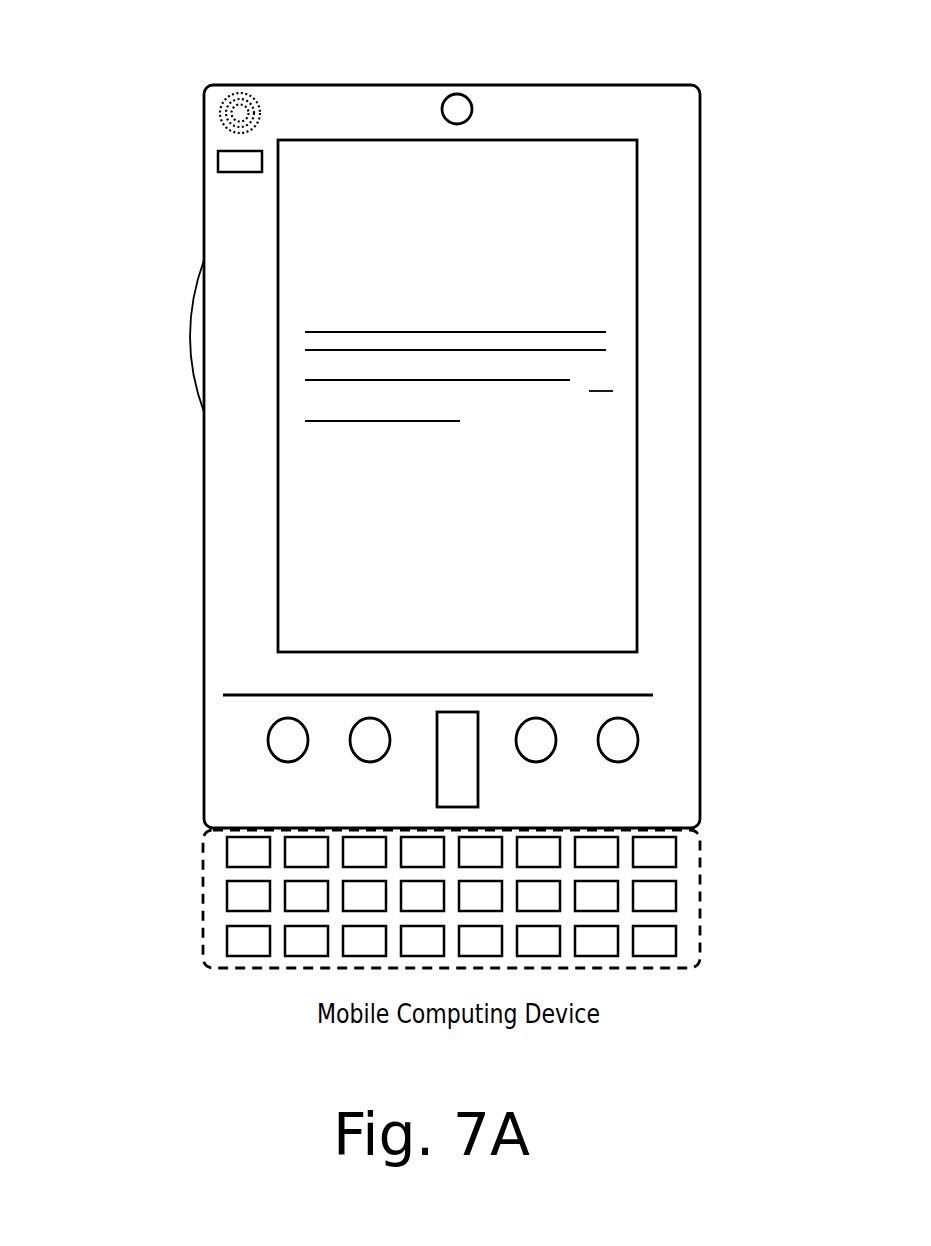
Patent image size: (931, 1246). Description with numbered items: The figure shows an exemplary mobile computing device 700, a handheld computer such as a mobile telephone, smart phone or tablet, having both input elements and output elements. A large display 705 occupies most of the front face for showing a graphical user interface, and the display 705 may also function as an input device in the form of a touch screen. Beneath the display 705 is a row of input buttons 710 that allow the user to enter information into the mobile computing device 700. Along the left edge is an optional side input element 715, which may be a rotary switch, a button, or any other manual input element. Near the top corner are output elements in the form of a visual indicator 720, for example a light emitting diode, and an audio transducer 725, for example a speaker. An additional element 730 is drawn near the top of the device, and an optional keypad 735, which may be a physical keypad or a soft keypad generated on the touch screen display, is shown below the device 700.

The mobile computing device 700 is at (690, 104).
The display 705 is at (388, 564).
The input buttons 710 is at (453, 765).
The side input element 715 is at (195, 335).
The visual indicator 720 is at (218, 167).
The audio transducer 725 is at (218, 115).
The camera / microphone 730 is at (468, 107).
The keypad 735 is at (213, 945).